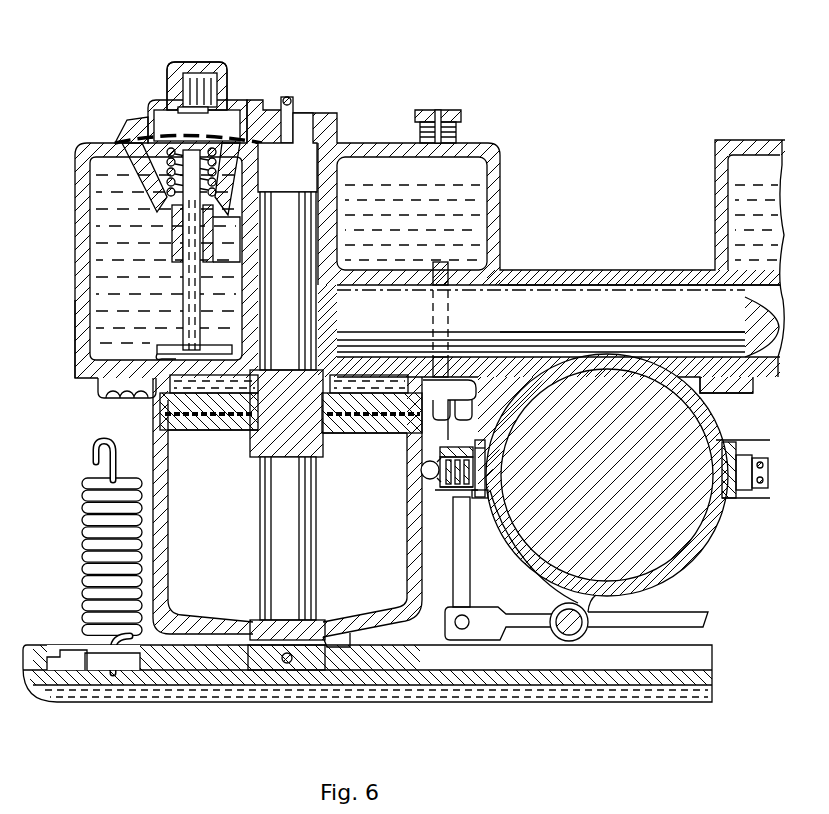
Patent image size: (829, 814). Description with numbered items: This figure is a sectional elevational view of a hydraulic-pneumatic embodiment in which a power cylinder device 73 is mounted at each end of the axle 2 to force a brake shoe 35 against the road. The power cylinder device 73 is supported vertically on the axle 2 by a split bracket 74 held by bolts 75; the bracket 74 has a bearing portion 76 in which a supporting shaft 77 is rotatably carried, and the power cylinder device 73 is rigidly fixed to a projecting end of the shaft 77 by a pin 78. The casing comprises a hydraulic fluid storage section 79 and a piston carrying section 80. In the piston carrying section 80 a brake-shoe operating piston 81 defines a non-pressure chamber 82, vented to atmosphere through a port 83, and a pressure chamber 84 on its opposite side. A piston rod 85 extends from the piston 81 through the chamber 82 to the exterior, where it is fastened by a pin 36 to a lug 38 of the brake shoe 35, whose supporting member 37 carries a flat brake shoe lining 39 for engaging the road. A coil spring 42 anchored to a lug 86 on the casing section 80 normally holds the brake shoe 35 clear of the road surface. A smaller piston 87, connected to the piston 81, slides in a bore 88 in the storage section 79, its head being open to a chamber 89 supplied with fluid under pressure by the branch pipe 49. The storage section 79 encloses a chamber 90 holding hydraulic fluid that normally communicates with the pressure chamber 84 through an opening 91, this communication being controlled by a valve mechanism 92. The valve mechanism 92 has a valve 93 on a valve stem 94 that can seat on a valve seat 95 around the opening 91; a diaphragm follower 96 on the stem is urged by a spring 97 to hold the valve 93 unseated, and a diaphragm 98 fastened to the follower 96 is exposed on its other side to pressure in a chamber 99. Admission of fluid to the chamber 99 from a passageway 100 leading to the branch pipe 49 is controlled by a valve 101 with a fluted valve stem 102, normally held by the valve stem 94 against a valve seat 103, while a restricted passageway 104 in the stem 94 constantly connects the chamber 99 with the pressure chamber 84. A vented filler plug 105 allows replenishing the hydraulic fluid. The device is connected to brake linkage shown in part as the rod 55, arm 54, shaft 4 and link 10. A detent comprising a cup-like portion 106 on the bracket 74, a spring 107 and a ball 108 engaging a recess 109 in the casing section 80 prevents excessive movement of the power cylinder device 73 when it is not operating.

The axle 2 is at (696, 561).
The shaft 4 is at (566, 620).
The link 10 is at (667, 626).
The brake shoe 35 is at (80, 714).
The pin 36 is at (284, 661).
The supporting member 37 is at (283, 690).
The lug 38 is at (313, 659).
The brake shoe lining 39 is at (395, 688).
The coil spring 42 is at (85, 534).
The branch pipe 49 is at (292, 102).
The arm 54 is at (500, 620).
The rod 55 is at (469, 571).
The power cylinder device 73 is at (430, 295).
The split bracket 74 is at (709, 401).
The bolt 75 is at (482, 498).
The bearing portion 76 is at (576, 280).
The supporting shaft 77 is at (644, 280).
The pin 78 is at (447, 327).
The hydraulic fluid storage section 79 is at (85, 265).
The piston carrying section 80 is at (171, 486).
The brake-shoe operating piston 81 is at (185, 432).
The non-pressure chamber 82 is at (400, 571).
The port 83 is at (383, 626).
The pressure chamber 84 is at (240, 384).
The piston rod 85 is at (313, 497).
The lug 86 is at (120, 436).
The piston 87 is at (301, 244).
The bore 88 is at (321, 324).
The chamber 89 is at (316, 137).
The chamber 90 is at (93, 319).
The opening 91 is at (151, 404).
The valve mechanism 92 is at (198, 49).
The valve 93 is at (165, 347).
The valve stem 94 is at (190, 306).
The valve seat 95 is at (166, 355).
The diaphragm follower 96 is at (158, 155).
The spring 97 is at (176, 202).
The diaphragm 98 is at (150, 141).
The chamber 99 is at (160, 118).
The passageway 100 is at (203, 108).
The valve 101 is at (202, 107).
The fluted valve stem 102 is at (187, 70).
The valve seat 103 is at (183, 106).
The restricted passageway 104 is at (192, 295).
The filler plug 105 is at (452, 114).
The cup-like portion 106 is at (448, 447).
The spring 107 is at (444, 492).
The ball 108 is at (424, 466).
The recess 109 is at (426, 476).